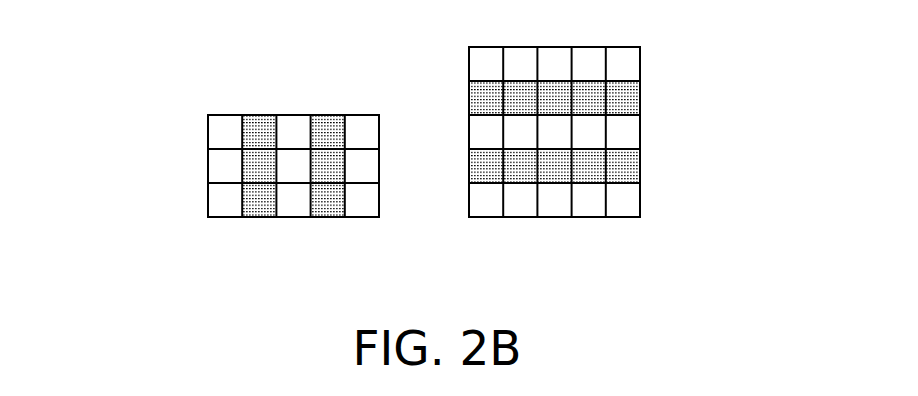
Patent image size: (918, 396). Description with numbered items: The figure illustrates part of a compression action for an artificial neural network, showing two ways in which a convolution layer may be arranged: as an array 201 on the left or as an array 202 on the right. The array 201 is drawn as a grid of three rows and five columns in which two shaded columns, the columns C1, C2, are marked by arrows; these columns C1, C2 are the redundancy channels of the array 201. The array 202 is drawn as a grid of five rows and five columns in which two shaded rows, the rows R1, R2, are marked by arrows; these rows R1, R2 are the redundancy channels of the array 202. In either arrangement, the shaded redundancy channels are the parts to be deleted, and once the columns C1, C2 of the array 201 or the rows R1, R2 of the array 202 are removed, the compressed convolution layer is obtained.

The array 201 is at (165, 195).
The array 202 is at (703, 215).
The column C1 is at (260, 108).
The column C2 is at (327, 108).
The row R1 is at (644, 98).
The row R2 is at (644, 167).